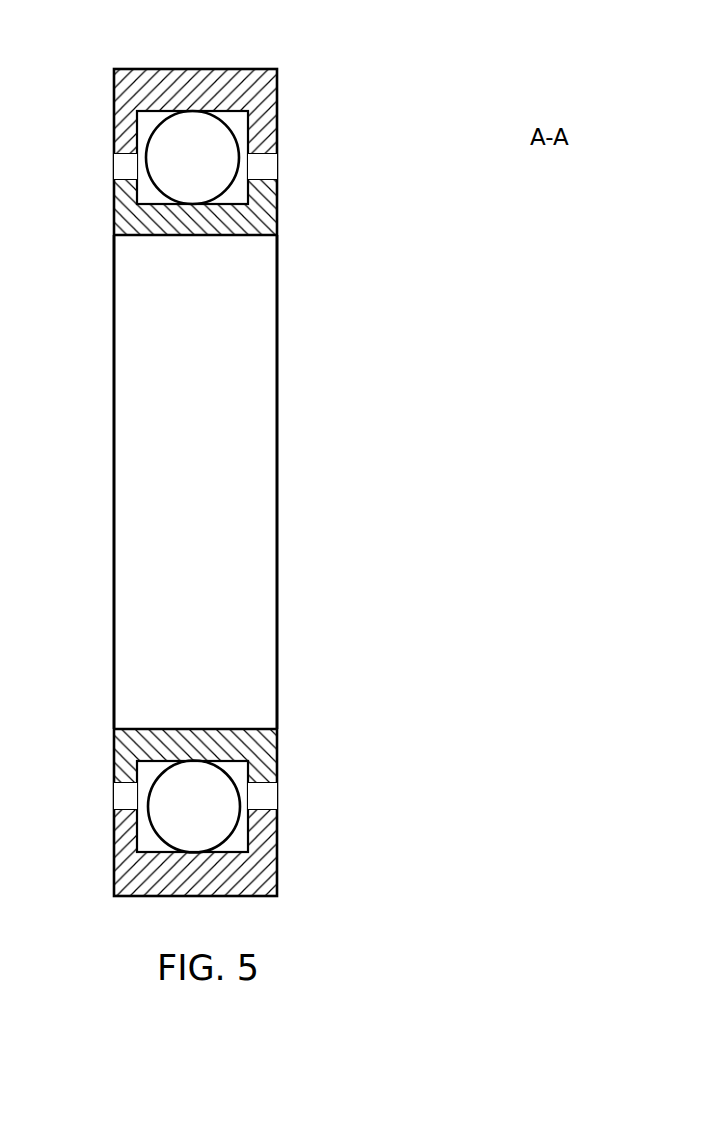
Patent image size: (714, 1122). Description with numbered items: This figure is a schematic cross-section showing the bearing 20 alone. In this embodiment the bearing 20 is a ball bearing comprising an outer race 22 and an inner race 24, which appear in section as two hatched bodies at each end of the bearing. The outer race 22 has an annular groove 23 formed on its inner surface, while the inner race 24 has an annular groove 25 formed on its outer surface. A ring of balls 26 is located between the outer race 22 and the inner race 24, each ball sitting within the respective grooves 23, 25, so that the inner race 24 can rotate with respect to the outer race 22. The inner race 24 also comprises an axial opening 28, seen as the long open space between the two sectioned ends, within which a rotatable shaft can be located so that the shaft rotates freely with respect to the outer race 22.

The bearing 20 is at (507, 42).
The outer race 22 is at (258, 90).
The annular groove 23 is at (247, 125).
The inner race 24 is at (263, 212).
The annular groove 25 is at (252, 187).
The balls 26 is at (172, 156).
The axial opening 28 is at (235, 507).